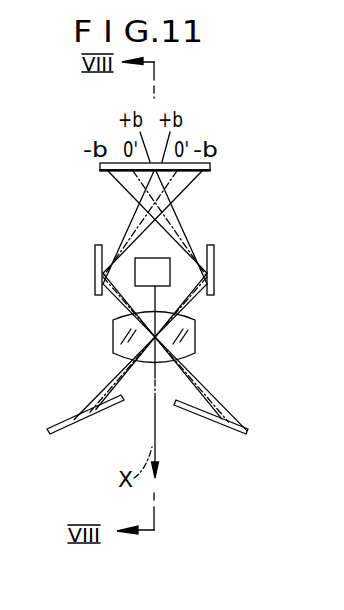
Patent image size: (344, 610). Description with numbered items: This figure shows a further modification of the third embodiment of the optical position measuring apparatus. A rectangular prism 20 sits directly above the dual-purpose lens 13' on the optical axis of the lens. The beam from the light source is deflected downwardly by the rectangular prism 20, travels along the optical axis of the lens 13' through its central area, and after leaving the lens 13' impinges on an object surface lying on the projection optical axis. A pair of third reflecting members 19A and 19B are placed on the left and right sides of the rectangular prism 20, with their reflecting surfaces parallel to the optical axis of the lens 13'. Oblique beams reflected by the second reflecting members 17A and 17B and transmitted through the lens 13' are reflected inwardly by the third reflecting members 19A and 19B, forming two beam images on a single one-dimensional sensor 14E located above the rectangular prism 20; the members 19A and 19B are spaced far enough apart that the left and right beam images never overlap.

The one-dimensional sensor 14E is at (205, 172).
The third reflecting member 19A is at (95, 247).
The third reflecting member 19B is at (216, 276).
The rectangular prism 20 is at (141, 272).
The dual-purpose lens 13' is at (186, 336).
The second reflecting member 17A is at (187, 410).
The second reflecting member 17B is at (112, 410).